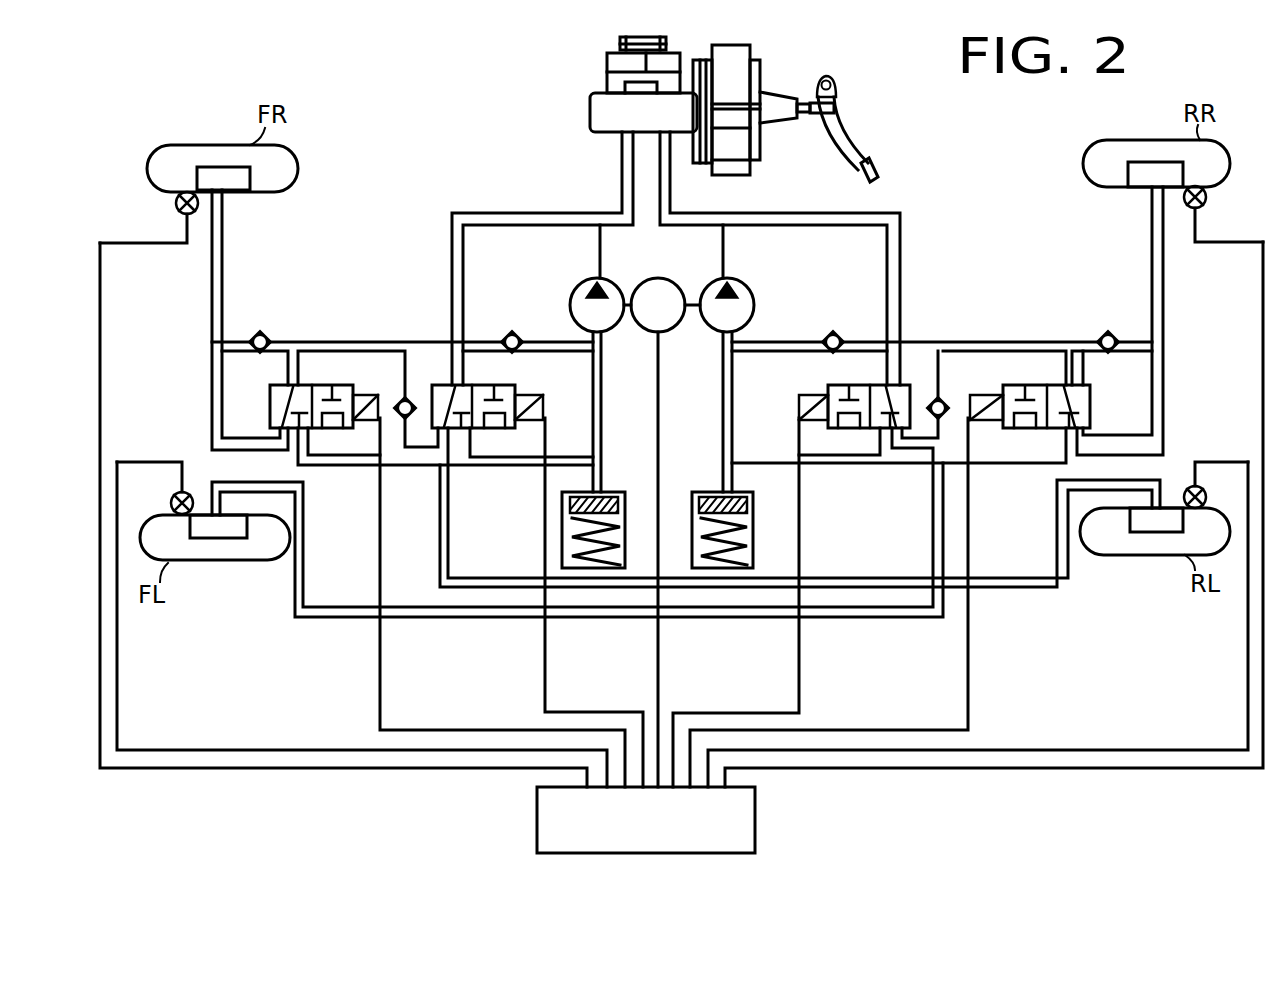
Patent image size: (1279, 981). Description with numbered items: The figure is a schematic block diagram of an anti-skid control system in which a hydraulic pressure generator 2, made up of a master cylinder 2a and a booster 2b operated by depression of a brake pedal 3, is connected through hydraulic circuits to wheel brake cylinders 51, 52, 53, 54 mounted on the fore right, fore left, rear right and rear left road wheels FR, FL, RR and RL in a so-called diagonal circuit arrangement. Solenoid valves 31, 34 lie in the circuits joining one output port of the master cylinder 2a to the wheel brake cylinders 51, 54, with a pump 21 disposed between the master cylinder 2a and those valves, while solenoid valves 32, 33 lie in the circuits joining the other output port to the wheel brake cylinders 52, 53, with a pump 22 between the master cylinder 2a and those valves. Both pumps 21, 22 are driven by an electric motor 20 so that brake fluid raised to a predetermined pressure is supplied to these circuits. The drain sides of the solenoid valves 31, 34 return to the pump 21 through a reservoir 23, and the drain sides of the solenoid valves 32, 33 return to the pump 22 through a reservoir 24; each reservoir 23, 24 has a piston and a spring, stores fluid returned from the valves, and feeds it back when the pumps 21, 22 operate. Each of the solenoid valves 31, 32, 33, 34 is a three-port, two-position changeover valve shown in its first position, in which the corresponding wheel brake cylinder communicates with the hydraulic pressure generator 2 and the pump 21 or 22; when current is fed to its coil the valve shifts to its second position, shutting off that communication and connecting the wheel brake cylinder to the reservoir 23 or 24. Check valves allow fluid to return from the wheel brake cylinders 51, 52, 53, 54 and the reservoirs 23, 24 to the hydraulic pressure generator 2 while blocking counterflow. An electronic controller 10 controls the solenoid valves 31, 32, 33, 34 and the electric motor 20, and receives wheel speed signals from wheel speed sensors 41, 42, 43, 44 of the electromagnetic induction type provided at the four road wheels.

The hydraulic pressure generator 2 is at (578, 95).
The master cylinder 2a is at (590, 124).
The booster 2b is at (750, 168).
The brake pedal 3 is at (853, 141).
The electronic controller 10 is at (755, 822).
The electric motor 20 is at (657, 277).
The pump 21 is at (572, 290).
The pump 22 is at (748, 292).
The reservoir 23 is at (562, 525).
The reservoir 24 is at (753, 546).
The solenoid valve 31 is at (320, 385).
The solenoid valve 32 is at (830, 385).
The solenoid valve 33 is at (1010, 385).
The solenoid valve 34 is at (505, 385).
The wheel speed sensor 41 is at (176, 206).
The wheel speed sensor 42 is at (172, 499).
The wheel speed sensor 43 is at (1206, 202).
The wheel speed sensor 44 is at (1222, 490).
The wheel brake cylinder 51 is at (237, 192).
The wheel brake cylinder 52 is at (233, 540).
The wheel brake cylinder 53 is at (1138, 187).
The wheel brake cylinder 54 is at (1145, 534).